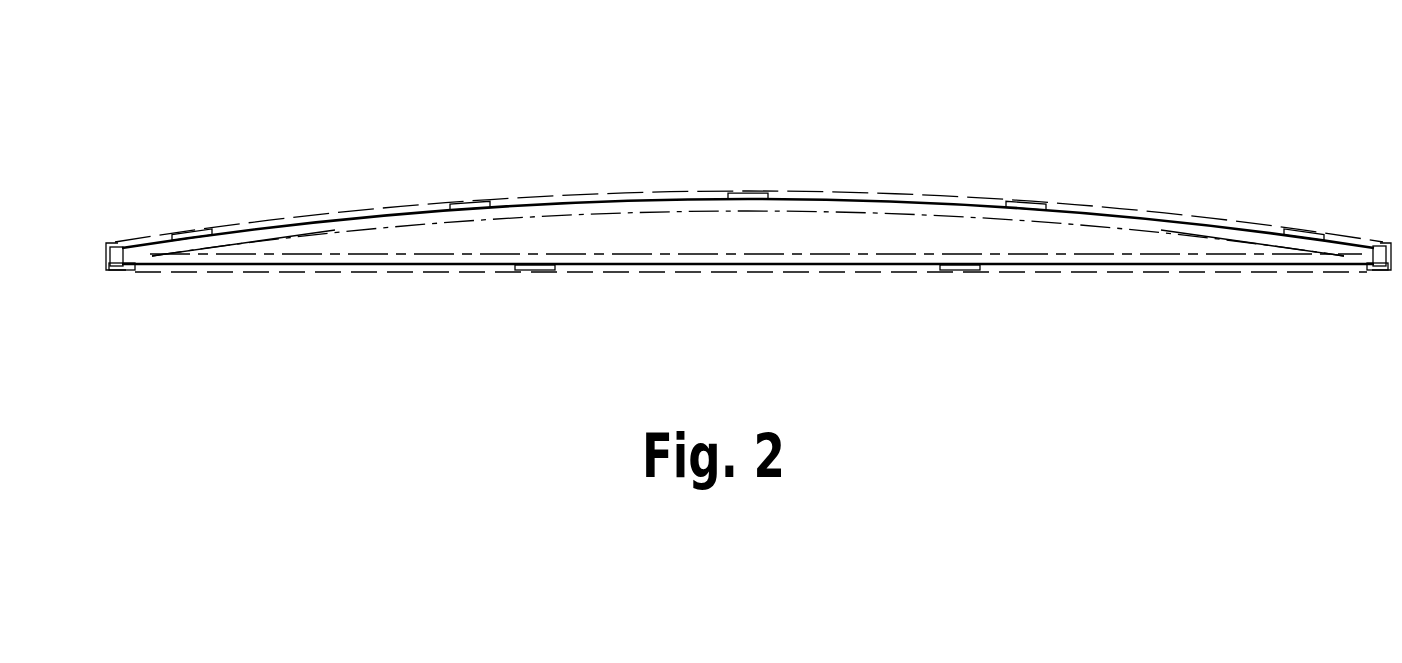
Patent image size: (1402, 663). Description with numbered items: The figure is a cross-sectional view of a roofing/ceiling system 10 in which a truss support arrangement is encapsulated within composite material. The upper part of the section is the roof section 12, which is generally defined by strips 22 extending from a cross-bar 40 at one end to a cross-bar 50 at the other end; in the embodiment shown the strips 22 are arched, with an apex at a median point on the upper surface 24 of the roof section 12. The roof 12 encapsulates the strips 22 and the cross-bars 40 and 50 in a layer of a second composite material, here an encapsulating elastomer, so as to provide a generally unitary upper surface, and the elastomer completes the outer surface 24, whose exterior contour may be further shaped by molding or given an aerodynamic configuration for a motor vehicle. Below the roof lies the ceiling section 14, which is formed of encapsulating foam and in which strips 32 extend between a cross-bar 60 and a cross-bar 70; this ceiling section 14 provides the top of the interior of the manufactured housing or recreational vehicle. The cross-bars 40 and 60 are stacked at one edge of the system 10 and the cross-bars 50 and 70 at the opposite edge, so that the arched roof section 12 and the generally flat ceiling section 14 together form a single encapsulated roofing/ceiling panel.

The roofing/ceiling system 10 is at (665, 87).
The roof section 12 is at (679, 216).
The ceiling section 14 is at (362, 251).
The strips 22 is at (390, 213).
The upper surface 24 is at (608, 192).
The strips 32 is at (703, 266).
The cross-bar 40 is at (116, 247).
The cross-bar 50 is at (1379, 247).
The cross-bar 60 is at (122, 271).
The cross-bar 70 is at (1372, 272).